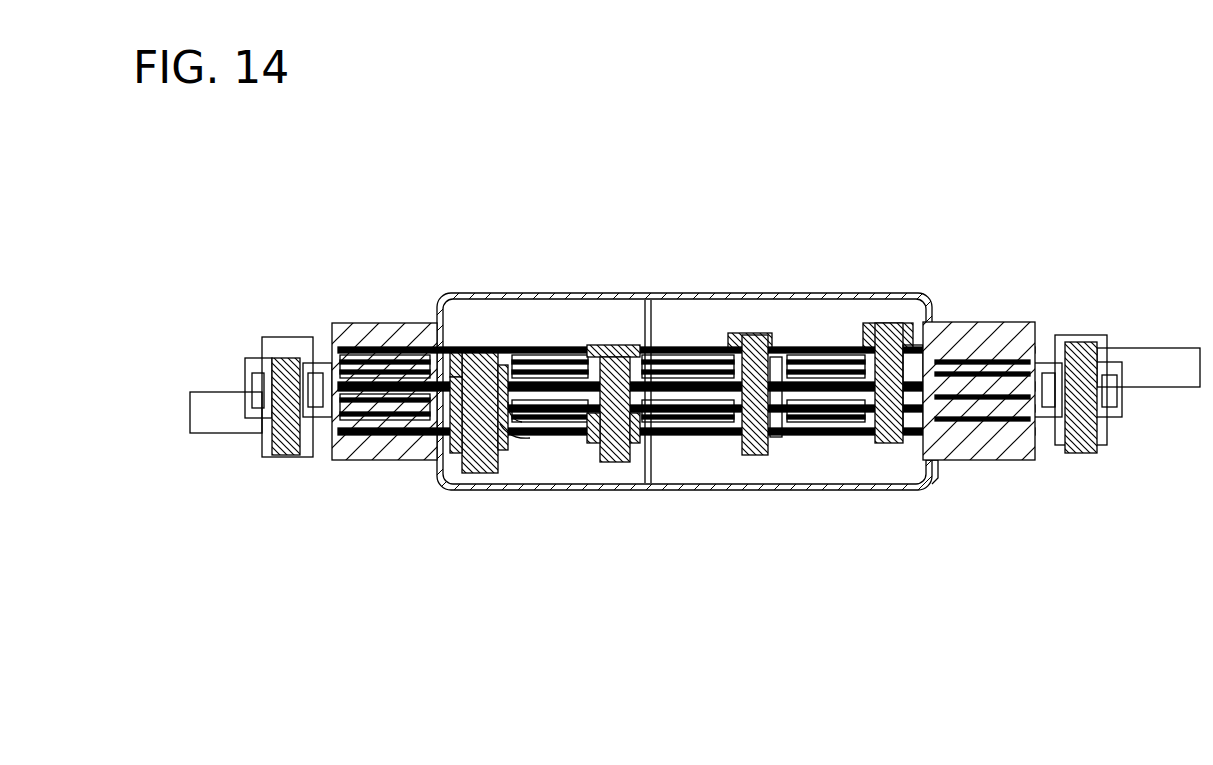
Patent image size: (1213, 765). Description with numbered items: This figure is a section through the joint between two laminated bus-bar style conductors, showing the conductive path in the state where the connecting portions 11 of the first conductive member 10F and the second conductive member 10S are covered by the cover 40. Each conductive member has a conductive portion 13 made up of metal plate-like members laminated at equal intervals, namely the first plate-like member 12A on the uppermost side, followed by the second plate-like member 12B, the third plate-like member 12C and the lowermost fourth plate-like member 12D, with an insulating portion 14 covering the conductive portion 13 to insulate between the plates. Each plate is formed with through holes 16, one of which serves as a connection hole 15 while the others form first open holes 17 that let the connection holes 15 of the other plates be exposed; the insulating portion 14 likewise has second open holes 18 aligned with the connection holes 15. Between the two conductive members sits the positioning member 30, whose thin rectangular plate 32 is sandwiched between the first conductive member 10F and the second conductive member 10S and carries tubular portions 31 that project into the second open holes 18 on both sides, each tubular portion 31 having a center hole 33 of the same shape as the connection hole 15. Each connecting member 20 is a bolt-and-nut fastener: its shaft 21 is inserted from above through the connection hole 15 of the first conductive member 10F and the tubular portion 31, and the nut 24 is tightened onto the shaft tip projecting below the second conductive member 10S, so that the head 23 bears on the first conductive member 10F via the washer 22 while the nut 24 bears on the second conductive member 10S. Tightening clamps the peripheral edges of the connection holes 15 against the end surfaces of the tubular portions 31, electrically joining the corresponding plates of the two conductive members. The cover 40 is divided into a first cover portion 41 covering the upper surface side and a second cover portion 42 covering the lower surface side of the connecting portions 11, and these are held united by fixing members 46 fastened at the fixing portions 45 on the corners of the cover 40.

The second conductive member 10S is at (220, 434).
The first conductive member 10F is at (1147, 350).
The connecting portion 11 is at (810, 330).
The first plate-like member 12A is at (926, 395).
The second plate-like member 12B is at (965, 400).
The third plate-like member 12C is at (995, 400).
The fourth plate-like member 12D is at (1030, 400).
The conductive portion 13 is at (407, 420).
The insulating portion 14 is at (393, 363).
The connection hole 15 is at (760, 407).
The through holes 16 is at (697, 459).
The first open holes 17 is at (540, 410).
The second open holes 18 is at (450, 420).
The connecting member 20 is at (480, 365).
The shaft 21 is at (520, 410).
The washer 22 is at (500, 373).
The head 23 is at (463, 355).
The nut 24 is at (500, 430).
The positioning member 30 is at (717, 355).
The tubular portions 31 is at (787, 347).
The plate 32 is at (655, 365).
The center hole 33 is at (726, 353).
The cover 40 is at (560, 310).
The first cover portion 41 is at (848, 310).
The second cover portion 42 is at (888, 473).
The fixing portions 45 is at (252, 362).
The fixing members 46 is at (285, 337).